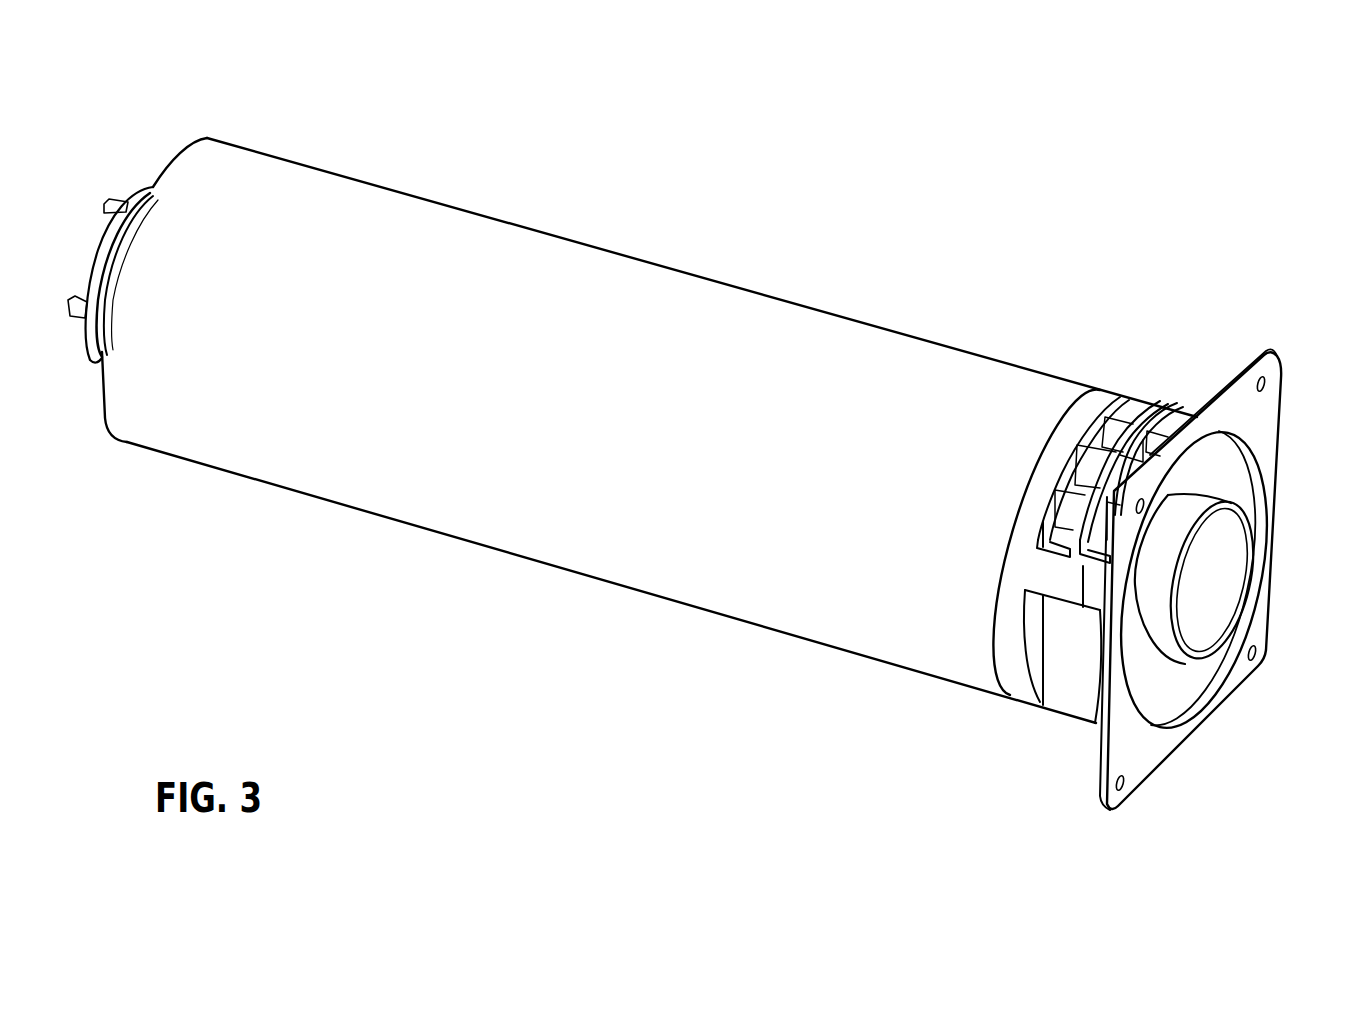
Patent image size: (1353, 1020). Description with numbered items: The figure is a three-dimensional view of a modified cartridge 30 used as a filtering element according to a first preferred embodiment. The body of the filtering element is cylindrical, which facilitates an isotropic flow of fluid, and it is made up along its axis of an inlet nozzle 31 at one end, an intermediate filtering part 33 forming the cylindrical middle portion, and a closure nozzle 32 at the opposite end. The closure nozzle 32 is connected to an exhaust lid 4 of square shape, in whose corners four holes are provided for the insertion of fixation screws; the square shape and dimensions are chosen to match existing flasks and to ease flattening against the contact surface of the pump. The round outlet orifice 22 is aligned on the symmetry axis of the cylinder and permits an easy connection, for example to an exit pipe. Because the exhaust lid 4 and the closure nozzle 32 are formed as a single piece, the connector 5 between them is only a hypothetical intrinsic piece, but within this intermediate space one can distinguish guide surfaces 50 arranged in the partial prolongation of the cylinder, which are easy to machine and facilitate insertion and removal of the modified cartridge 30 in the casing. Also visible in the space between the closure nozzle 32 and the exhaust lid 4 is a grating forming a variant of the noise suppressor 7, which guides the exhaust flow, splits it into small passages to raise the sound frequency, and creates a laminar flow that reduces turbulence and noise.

The modified cartridge 30 is at (890, 242).
The inlet nozzle 31 is at (149, 187).
The intermediate filtering part 33 is at (495, 216).
The closure nozzle 32 is at (1125, 397).
The noise suppressor 7 is at (1167, 413).
The connector 5 is at (1085, 748).
The guide surfaces 50 is at (1053, 577).
The exhaust lid 4 is at (1136, 755).
The outlet orifice 22 is at (1217, 588).